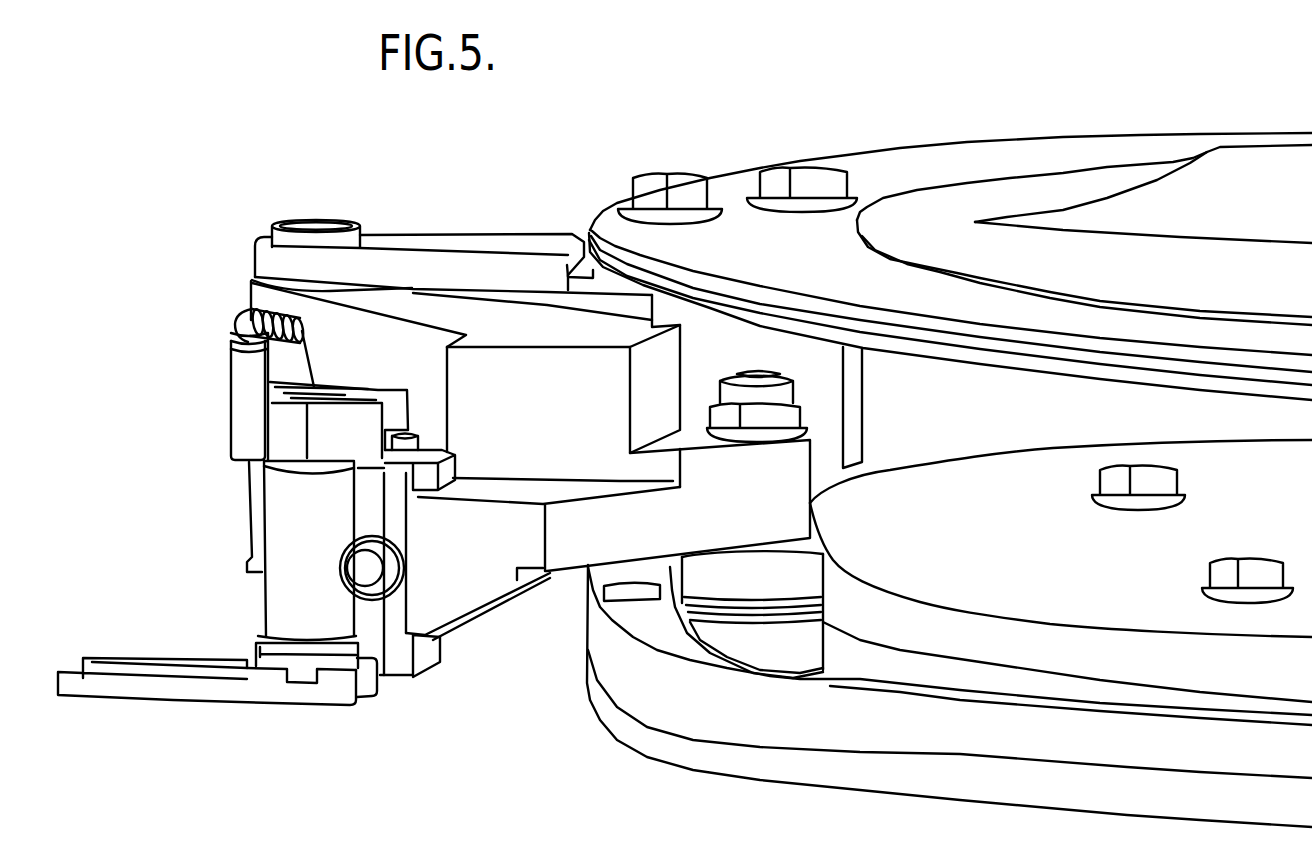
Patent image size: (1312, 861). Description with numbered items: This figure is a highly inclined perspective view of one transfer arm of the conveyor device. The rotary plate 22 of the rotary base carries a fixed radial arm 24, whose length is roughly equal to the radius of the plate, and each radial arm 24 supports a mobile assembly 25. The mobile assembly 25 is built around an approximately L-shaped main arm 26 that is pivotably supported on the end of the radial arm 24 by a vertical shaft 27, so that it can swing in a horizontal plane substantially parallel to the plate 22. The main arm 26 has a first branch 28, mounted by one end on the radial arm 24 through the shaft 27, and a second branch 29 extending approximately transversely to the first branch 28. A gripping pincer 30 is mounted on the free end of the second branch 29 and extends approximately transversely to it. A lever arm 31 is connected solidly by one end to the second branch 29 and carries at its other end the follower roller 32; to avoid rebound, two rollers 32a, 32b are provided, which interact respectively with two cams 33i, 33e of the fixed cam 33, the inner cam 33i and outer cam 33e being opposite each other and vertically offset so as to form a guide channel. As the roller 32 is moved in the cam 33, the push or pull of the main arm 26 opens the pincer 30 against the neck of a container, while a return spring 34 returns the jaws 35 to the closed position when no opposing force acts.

The rotary plate 22 is at (887, 172).
The radial arm 24 is at (393, 234).
The mobile assembly 25 is at (246, 259).
The main arm 26 is at (541, 325).
The vertical shaft 27 is at (310, 220).
The first branch 28 is at (432, 315).
The second branch 29 is at (467, 568).
The gripping pincer 30 is at (187, 716).
The lever arm 31 is at (637, 532).
The follower roller 32 is at (838, 586).
The roller 32a is at (772, 578).
The roller 32b is at (793, 650).
The fixed cam 33 is at (949, 587).
The inner cam 33i is at (980, 645).
The outer cam 33e is at (1017, 692).
The return spring 34 is at (238, 320).
The jaws 35 is at (123, 661).